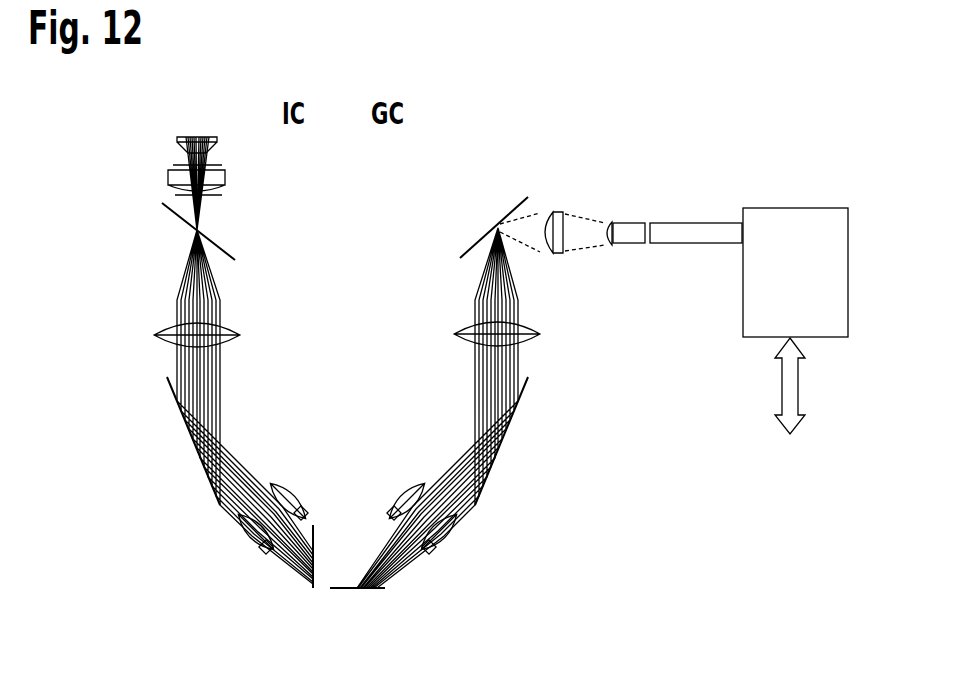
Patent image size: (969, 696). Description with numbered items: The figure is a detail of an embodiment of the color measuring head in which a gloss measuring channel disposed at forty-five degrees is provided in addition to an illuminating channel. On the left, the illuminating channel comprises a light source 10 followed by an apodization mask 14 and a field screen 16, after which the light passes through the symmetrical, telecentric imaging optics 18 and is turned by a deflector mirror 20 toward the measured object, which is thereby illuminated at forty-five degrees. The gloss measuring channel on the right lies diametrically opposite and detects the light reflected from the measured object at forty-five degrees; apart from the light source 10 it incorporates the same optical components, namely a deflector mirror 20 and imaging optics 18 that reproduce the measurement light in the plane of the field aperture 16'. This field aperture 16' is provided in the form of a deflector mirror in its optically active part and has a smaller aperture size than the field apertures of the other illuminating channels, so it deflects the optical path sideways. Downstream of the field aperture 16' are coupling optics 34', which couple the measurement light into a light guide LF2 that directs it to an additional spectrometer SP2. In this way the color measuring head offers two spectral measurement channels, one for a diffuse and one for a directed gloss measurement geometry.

The light source 10 is at (182, 137).
The apodization mask 14 is at (172, 176).
The field screen 16 is at (175, 236).
The field aperture 16' is at (485, 213).
The telecentric imaging optics 18 is at (240, 336).
The deflector mirror 20 is at (193, 441).
The coupling optics 34' is at (568, 200).
The light guide LF2 is at (697, 233).
The spectrometer SP2 is at (777, 218).